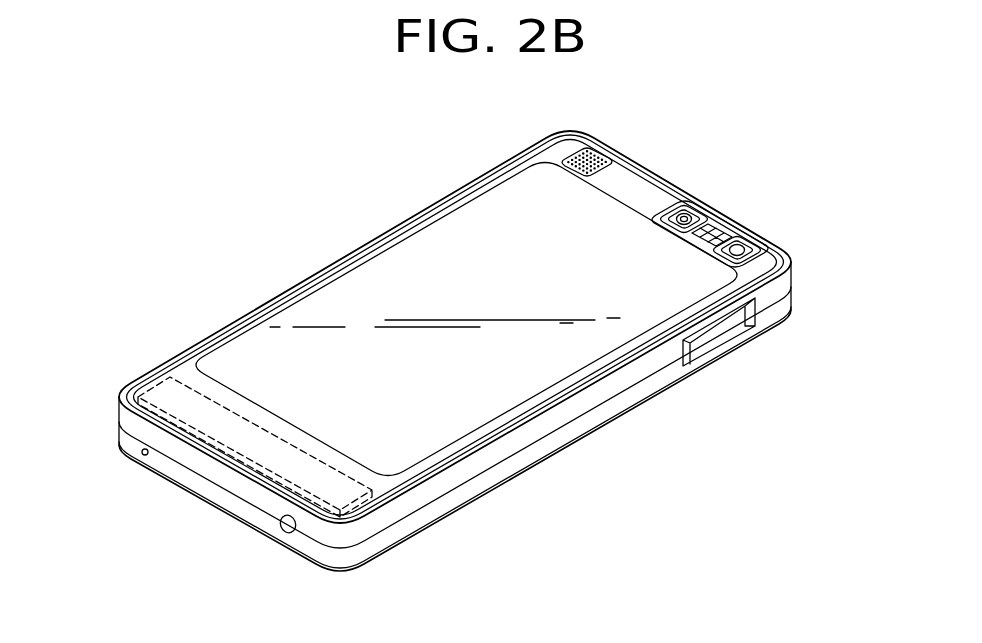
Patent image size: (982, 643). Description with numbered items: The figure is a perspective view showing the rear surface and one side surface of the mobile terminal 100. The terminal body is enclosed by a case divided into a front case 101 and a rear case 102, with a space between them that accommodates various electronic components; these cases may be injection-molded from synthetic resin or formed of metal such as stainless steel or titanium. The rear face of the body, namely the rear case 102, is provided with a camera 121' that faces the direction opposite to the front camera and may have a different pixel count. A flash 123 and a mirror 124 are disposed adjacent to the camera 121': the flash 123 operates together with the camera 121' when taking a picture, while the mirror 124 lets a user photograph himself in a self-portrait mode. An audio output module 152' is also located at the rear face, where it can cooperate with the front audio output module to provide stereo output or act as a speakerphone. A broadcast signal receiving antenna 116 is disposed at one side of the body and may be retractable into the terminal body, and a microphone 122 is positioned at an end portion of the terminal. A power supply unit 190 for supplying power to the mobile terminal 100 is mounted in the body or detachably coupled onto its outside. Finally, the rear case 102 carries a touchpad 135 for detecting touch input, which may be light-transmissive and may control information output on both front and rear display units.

The mobile terminal 100 is at (410, 181).
The front case 101 is at (784, 302).
The rear case 102 is at (784, 283).
The broadcast signal receiving antenna 116 is at (283, 531).
The camera 121' is at (713, 194).
The microphone 122 is at (142, 455).
The flash 123 is at (722, 228).
The mirror 124 is at (745, 246).
The touchpad 135 is at (375, 276).
The audio output module 152' is at (623, 142).
The power supply unit 190 is at (152, 390).